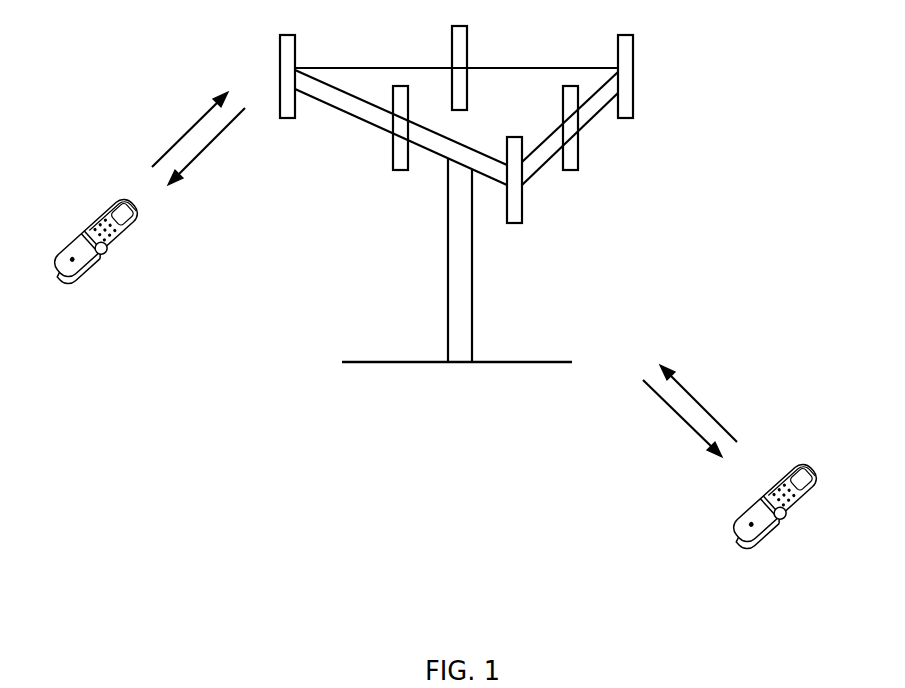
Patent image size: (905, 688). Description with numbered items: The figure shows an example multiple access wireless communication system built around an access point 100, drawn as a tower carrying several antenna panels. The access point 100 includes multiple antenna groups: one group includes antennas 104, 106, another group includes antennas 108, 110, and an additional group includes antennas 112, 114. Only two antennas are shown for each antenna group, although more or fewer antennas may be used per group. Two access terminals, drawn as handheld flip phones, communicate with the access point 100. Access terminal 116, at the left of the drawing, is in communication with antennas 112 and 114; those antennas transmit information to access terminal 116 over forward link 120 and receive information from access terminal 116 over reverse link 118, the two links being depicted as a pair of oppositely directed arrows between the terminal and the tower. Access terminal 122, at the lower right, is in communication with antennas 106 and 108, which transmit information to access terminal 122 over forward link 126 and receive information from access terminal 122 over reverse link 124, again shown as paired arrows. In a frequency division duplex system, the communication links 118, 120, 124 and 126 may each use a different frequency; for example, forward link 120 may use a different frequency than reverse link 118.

The access point 100 is at (458, 362).
The antenna 104 is at (512, 223).
The antenna 106 is at (572, 170).
The antenna 108 is at (627, 35).
The antenna 110 is at (462, 26).
The antenna 112 is at (285, 35).
The antenna 114 is at (400, 170).
The access terminal 116 is at (102, 267).
The reverse link 118 is at (190, 125).
The forward link 120 is at (203, 152).
The access terminal 122 is at (752, 545).
The reverse link 124 is at (682, 423).
The forward link 126 is at (702, 403).